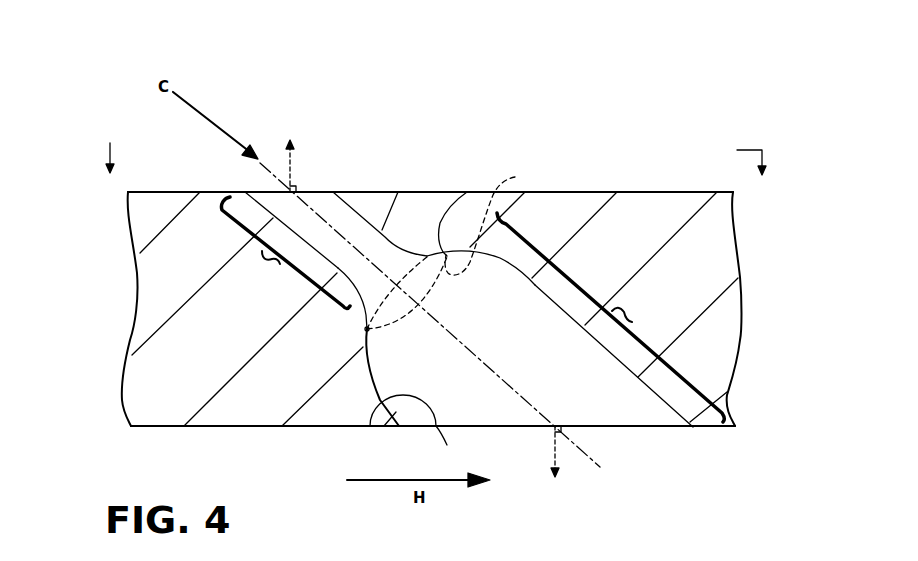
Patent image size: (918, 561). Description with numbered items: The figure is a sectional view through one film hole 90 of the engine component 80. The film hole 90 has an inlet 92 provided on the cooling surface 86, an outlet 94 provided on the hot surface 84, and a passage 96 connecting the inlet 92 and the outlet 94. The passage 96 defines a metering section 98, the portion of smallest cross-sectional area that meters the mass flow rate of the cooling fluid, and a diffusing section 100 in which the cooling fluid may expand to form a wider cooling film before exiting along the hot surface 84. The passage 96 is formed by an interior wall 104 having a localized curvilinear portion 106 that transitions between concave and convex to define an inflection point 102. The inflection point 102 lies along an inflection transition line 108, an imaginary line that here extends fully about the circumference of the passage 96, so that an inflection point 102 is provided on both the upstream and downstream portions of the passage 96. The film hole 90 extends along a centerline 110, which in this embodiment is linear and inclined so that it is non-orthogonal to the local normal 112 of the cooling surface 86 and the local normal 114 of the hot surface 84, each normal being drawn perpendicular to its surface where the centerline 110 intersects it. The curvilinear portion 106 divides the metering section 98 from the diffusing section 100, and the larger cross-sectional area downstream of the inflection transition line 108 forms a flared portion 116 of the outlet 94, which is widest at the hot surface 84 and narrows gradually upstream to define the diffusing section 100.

The engine component 80 is at (598, 189).
The hot surface 84 is at (707, 427).
The cooling surface 86 is at (665, 192).
The film hole 90 is at (378, 213).
The inlet 92 is at (272, 191).
The outlet 94 is at (635, 427).
The passage 96 is at (521, 353).
The metering section 98 is at (285, 250).
The diffusing section 100 is at (610, 320).
The inflection point 102 is at (467, 192).
The interior wall 104 is at (416, 431).
The localized curvilinear portion 106 is at (347, 313).
The inflection transition line 108 is at (446, 327).
The centerline 110 is at (330, 221).
The local normal 112 is at (297, 157).
The local normal 114 is at (553, 430).
The flared portion 116 is at (372, 395).